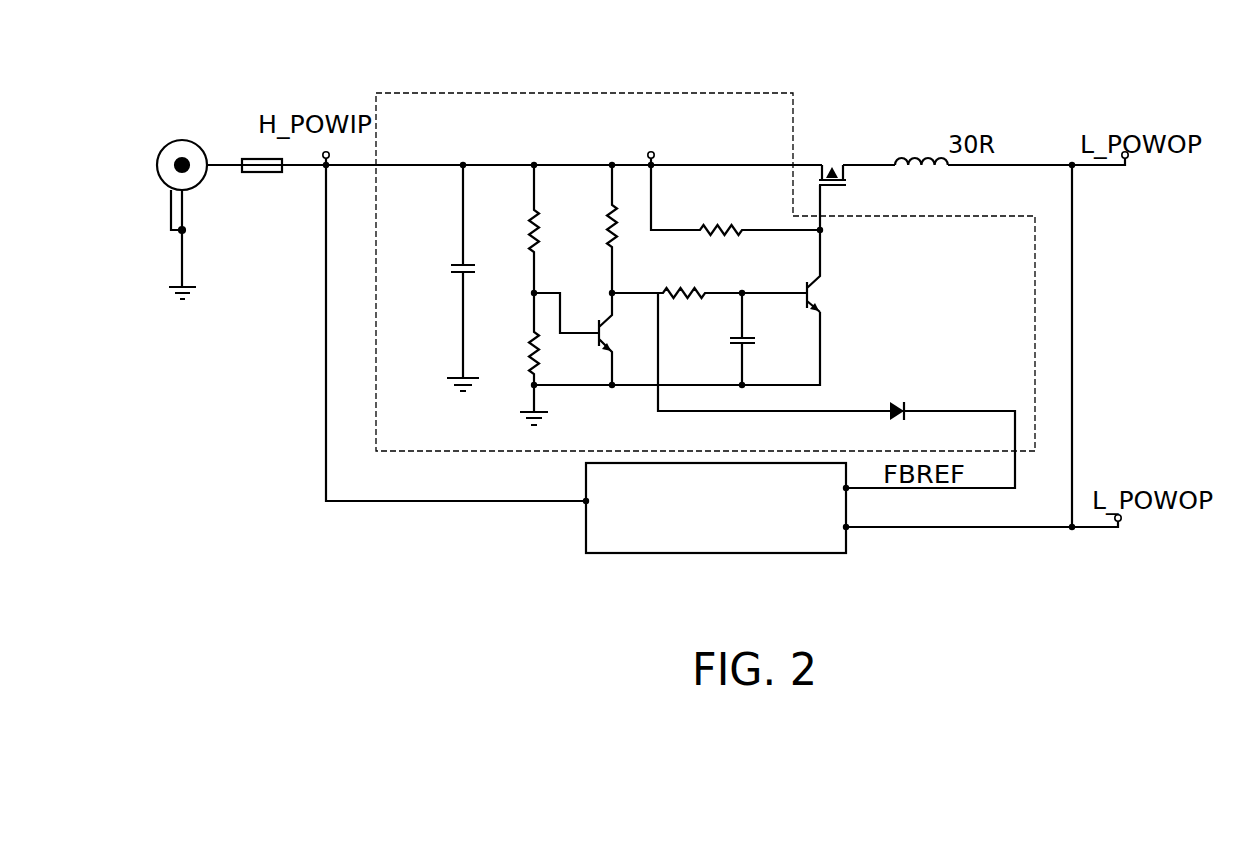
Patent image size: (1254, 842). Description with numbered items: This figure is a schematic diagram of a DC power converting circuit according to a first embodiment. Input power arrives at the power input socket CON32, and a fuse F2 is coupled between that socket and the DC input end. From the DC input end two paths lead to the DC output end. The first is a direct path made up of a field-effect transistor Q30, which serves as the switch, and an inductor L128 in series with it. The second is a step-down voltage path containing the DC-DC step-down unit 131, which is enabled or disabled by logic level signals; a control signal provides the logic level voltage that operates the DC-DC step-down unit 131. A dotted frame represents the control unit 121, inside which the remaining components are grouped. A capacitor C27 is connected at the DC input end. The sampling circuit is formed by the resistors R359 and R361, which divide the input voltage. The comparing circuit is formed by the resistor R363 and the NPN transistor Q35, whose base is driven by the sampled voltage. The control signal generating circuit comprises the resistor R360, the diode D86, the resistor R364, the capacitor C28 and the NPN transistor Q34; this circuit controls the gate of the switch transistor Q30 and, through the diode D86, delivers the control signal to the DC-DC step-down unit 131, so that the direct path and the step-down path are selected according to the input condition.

The control unit 121 is at (705, 263).
The DC-DC step-down unit 131 is at (707, 553).
The power input socket CON32 is at (201, 205).
The fuse F2 is at (262, 184).
The inductor L128 is at (913, 148).
The capacitor C27 is at (430, 278).
The capacitor C28 is at (715, 339).
The resistor R359 is at (504, 229).
The resistor R360 is at (735, 200).
The resistor R361 is at (508, 359).
The resistor R363 is at (582, 229).
The resistor R364 is at (709, 281).
The FET transistor Q30 is at (837, 157).
The NPN transistor Q34 is at (839, 249).
The NPN transistor Q35 is at (627, 339).
The diode D86 is at (836, 390).